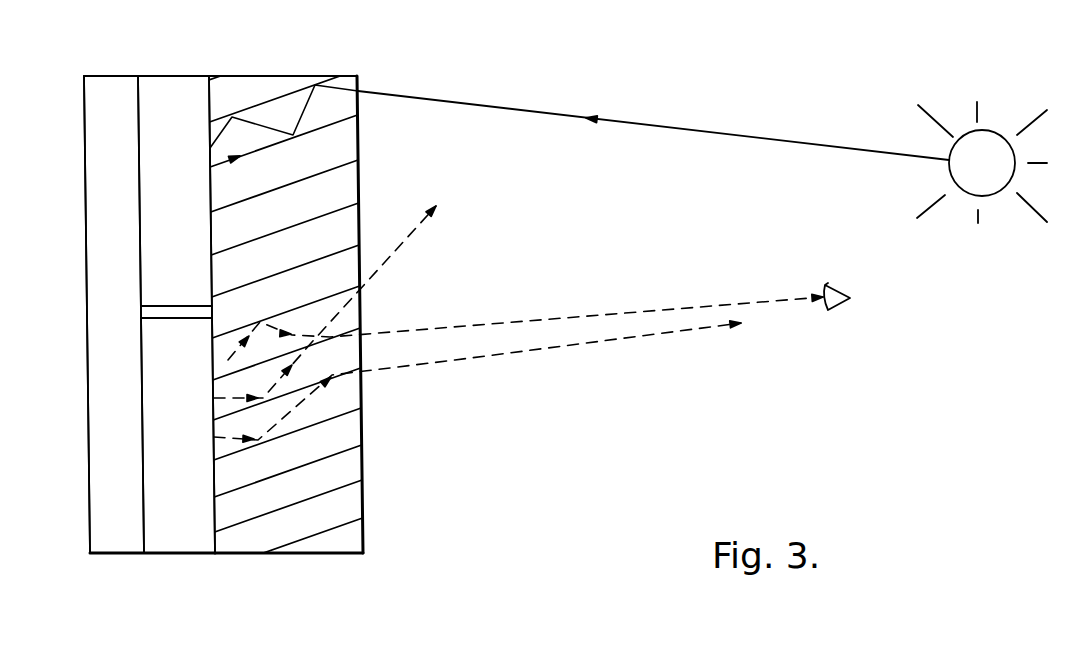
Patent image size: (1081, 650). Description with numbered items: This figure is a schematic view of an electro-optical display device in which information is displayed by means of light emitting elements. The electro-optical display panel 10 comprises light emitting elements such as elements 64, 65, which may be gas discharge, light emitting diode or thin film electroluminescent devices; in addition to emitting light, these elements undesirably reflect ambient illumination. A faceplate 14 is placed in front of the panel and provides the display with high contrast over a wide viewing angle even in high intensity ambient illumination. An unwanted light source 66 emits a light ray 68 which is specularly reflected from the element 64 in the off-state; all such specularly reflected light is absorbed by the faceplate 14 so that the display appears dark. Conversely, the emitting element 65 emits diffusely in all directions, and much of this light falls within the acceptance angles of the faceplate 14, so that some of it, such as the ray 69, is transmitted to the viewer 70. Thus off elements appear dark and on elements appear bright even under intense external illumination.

The electro-optical display panel 10 is at (87, 563).
The faceplate 14 is at (277, 77).
The light emitting element 64 is at (173, 93).
The emitting element 65 is at (160, 470).
The unwanted light source 66 is at (1016, 158).
The light ray 68 is at (692, 130).
The ray 69 is at (553, 317).
The viewer 70 is at (837, 308).